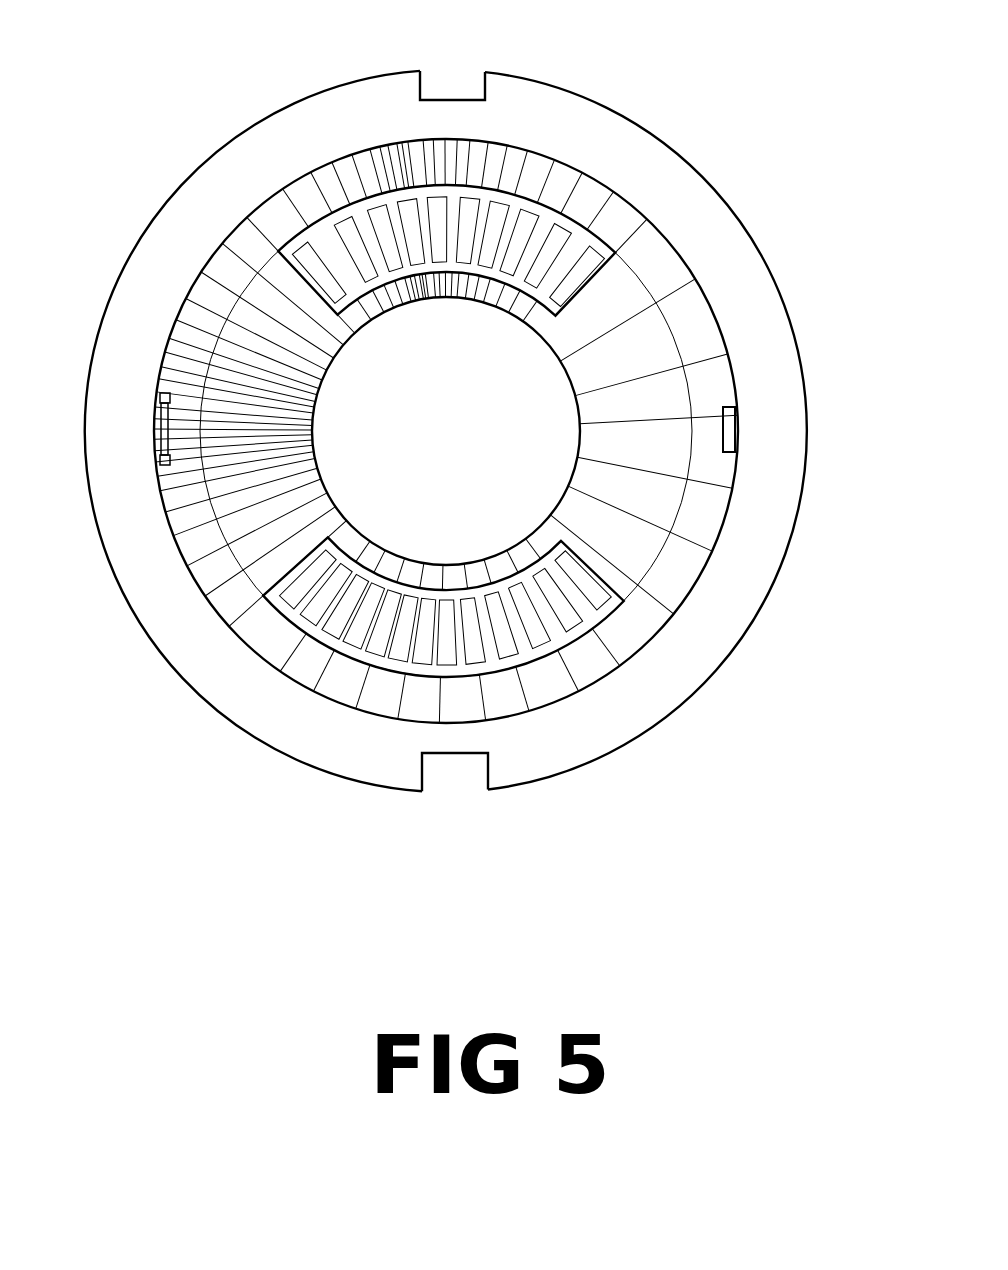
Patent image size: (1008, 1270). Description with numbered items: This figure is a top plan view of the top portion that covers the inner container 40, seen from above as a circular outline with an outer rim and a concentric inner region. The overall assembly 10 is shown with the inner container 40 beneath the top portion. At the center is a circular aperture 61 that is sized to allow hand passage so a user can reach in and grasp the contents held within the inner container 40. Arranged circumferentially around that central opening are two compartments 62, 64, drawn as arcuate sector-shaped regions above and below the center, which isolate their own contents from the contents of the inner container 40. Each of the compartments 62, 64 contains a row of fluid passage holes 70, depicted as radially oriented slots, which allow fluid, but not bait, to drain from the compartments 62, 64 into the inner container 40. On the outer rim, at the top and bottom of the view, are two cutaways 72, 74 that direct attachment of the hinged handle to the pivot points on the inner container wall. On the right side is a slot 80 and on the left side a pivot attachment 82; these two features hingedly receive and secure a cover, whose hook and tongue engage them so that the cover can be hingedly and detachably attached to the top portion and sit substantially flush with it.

The electric motor 10 is at (160, 170).
The inner container 40 is at (786, 298).
The circular aperture 61 is at (458, 450).
The compartment 62 is at (595, 275).
The compartment 64 is at (310, 643).
The fluid passage holes 70 is at (574, 244).
The cutaway 72 is at (448, 85).
The cutaway 74 is at (452, 765).
The slot 80 is at (734, 398).
The pivot attachment 82 is at (161, 393).